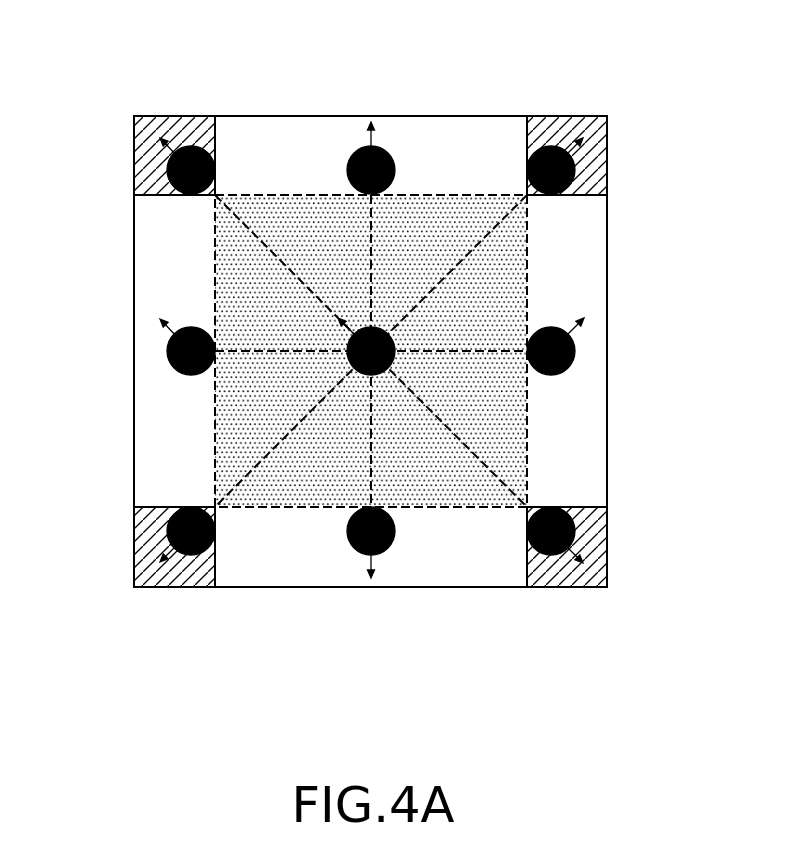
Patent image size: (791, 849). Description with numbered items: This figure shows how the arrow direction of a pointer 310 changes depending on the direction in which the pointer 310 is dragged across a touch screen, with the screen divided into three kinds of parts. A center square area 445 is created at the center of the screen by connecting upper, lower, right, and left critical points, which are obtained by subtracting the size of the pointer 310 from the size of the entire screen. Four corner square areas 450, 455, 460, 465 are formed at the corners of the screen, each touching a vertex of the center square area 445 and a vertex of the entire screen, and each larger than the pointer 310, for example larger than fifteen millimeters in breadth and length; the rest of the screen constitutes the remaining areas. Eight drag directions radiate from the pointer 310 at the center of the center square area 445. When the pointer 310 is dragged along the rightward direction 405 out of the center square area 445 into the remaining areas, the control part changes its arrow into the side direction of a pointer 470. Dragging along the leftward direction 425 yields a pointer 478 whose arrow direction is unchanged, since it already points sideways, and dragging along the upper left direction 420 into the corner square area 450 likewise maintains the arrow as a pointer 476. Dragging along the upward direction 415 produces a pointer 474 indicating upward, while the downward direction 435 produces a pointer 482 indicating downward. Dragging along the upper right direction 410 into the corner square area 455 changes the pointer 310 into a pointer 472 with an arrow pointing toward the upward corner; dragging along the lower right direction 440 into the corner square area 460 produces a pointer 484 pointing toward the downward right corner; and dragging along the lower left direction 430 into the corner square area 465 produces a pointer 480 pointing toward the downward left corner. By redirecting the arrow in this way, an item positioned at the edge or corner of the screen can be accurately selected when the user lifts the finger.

The pointer 310 is at (395, 362).
The drag direction to the right 405 is at (443, 351).
The drag direction toward the upper right corner 410 is at (472, 250).
The upward drag direction 415 is at (373, 258).
The drag direction toward the upper left corner 420 is at (282, 262).
The drag direction to the left 425 is at (275, 351).
The drag direction toward the lower left corner 430 is at (288, 432).
The downward drag direction 435 is at (370, 452).
The drag direction toward the lower right corner 440 is at (447, 427).
The center square area 445 is at (457, 195).
The corner square area 450 is at (150, 160).
The corner square area 455 is at (593, 163).
The corner square area 460 is at (595, 540).
The corner square area 465 is at (152, 542).
The pointer 470 is at (575, 350).
The pointer 472 is at (548, 148).
The pointer 474 is at (386, 148).
The pointer 476 is at (191, 146).
The pointer 478 is at (165, 350).
The pointer 480 is at (190, 555).
The pointer 482 is at (385, 554).
The pointer 484 is at (560, 553).